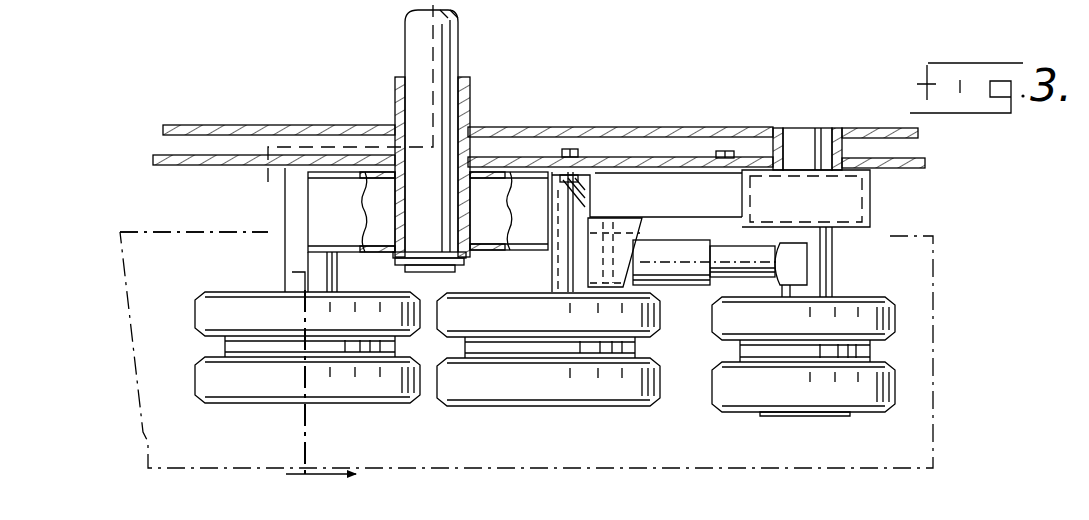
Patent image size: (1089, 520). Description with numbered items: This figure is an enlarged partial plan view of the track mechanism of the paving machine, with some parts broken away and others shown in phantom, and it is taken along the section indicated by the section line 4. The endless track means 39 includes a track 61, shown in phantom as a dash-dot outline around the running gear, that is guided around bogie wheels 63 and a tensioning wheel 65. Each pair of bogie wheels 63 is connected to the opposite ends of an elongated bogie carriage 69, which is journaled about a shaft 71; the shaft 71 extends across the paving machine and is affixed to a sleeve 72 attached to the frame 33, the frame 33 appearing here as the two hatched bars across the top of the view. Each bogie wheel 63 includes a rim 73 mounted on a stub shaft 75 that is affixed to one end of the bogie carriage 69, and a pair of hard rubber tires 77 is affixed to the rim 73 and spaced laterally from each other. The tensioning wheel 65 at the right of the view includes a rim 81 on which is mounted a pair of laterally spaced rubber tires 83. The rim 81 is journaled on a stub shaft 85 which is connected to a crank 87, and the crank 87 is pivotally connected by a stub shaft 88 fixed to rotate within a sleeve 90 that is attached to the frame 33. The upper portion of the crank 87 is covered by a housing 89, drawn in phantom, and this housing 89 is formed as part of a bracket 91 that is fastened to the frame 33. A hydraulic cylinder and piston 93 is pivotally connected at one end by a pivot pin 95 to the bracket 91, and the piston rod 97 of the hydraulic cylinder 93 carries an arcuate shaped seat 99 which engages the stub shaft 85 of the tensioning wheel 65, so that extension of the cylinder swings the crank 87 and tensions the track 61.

The section line 4- 4 is at (309, 381).
The frame 33 is at (920, 133).
The endless track means 39 is at (146, 228).
The track 61 is at (936, 452).
The bogie wheels 63 is at (404, 371).
The tensioning wheel 65 is at (827, 329).
The bogie carriage 69 is at (352, 232).
The shaft 71 is at (447, 60).
The sleeves 72 is at (468, 110).
The rim 73 is at (262, 347).
The stub shaft 75 is at (290, 250).
The hard rubber tires 77 is at (205, 364).
The rim 81 is at (745, 347).
The rubber tires 83 is at (895, 378).
The stub shaft 85 is at (833, 265).
The crank 87 is at (865, 209).
The stub shaft 88 is at (813, 135).
The housing 89 is at (855, 198).
The sleeve 90 is at (836, 130).
The bracket 91 is at (667, 198).
The hydraulic cylinder and piston 93 is at (688, 282).
The pivot pin 95 is at (622, 207).
The piston rod 97 is at (727, 257).
The arcuate shaped seat 99 is at (795, 273).